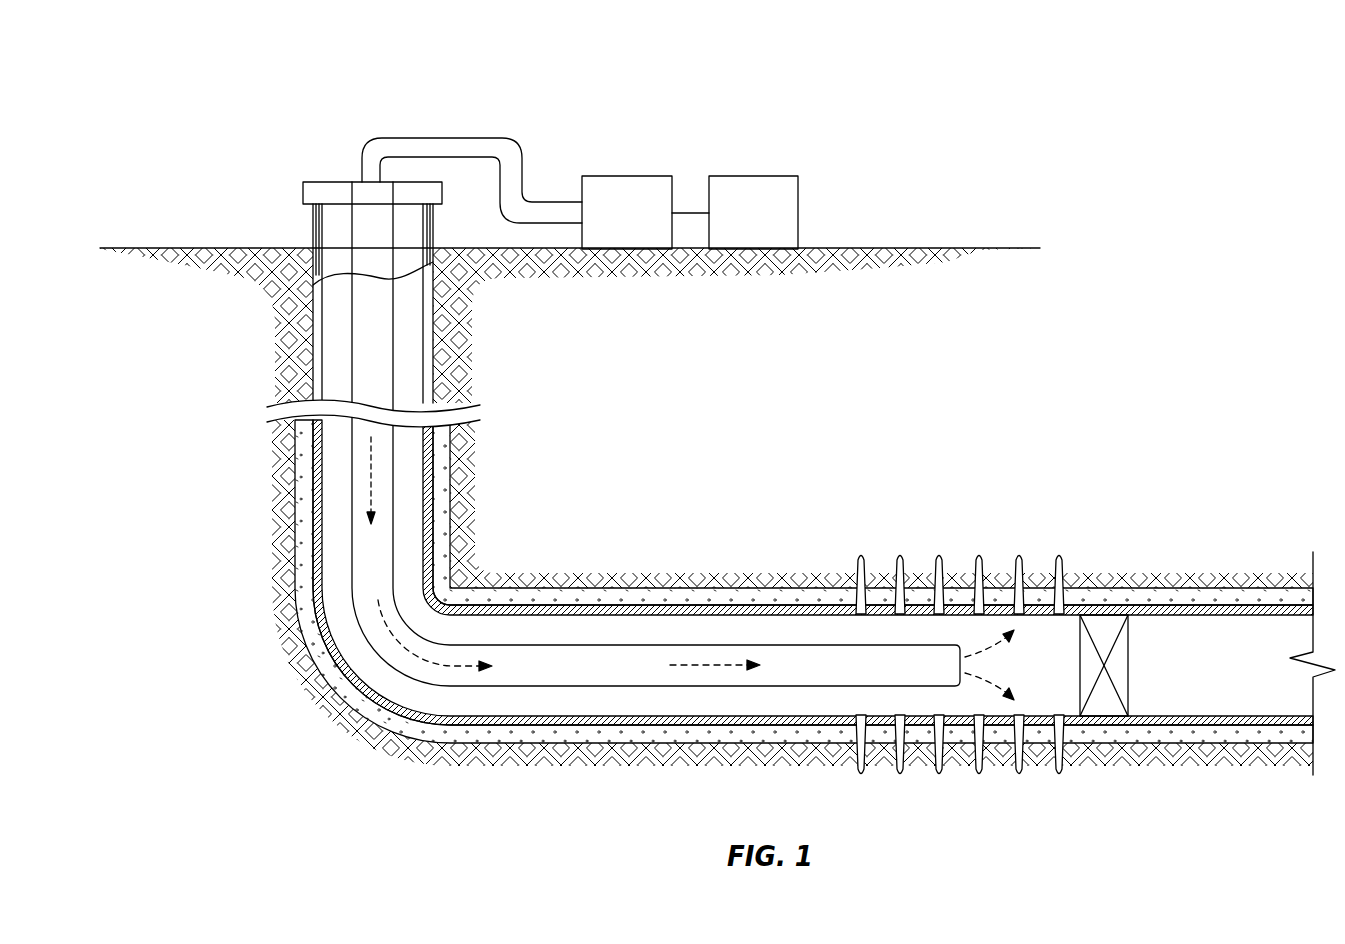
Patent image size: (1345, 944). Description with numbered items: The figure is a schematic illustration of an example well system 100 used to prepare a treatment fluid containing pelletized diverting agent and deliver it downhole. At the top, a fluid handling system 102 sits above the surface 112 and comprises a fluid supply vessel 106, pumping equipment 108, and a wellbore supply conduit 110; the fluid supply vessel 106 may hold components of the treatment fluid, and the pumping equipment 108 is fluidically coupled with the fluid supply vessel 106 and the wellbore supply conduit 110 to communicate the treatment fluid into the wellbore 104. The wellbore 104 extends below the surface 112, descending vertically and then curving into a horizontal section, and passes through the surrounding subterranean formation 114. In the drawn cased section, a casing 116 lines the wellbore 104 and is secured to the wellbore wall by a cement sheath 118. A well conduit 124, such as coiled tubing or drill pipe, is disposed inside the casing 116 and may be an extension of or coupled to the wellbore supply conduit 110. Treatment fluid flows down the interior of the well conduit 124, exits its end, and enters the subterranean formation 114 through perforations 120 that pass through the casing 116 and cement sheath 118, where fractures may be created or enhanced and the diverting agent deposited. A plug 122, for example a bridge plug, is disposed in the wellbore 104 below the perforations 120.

The well system 100 is at (213, 95).
The fluid handling system 102 is at (593, 153).
The wellbore 104 is at (801, 525).
The fluid supply vessel 106 is at (778, 175).
The pumping equipment 108 is at (632, 175).
The wellbore supply conduit 110 is at (440, 137).
The surface 112 is at (883, 248).
The subterranean formation 114 is at (537, 322).
The casing 116 is at (690, 603).
The cement sheath 118 is at (800, 598).
The perforations 120 is at (939, 551).
The plug 122 is at (1107, 617).
The well conduit 124 is at (553, 645).